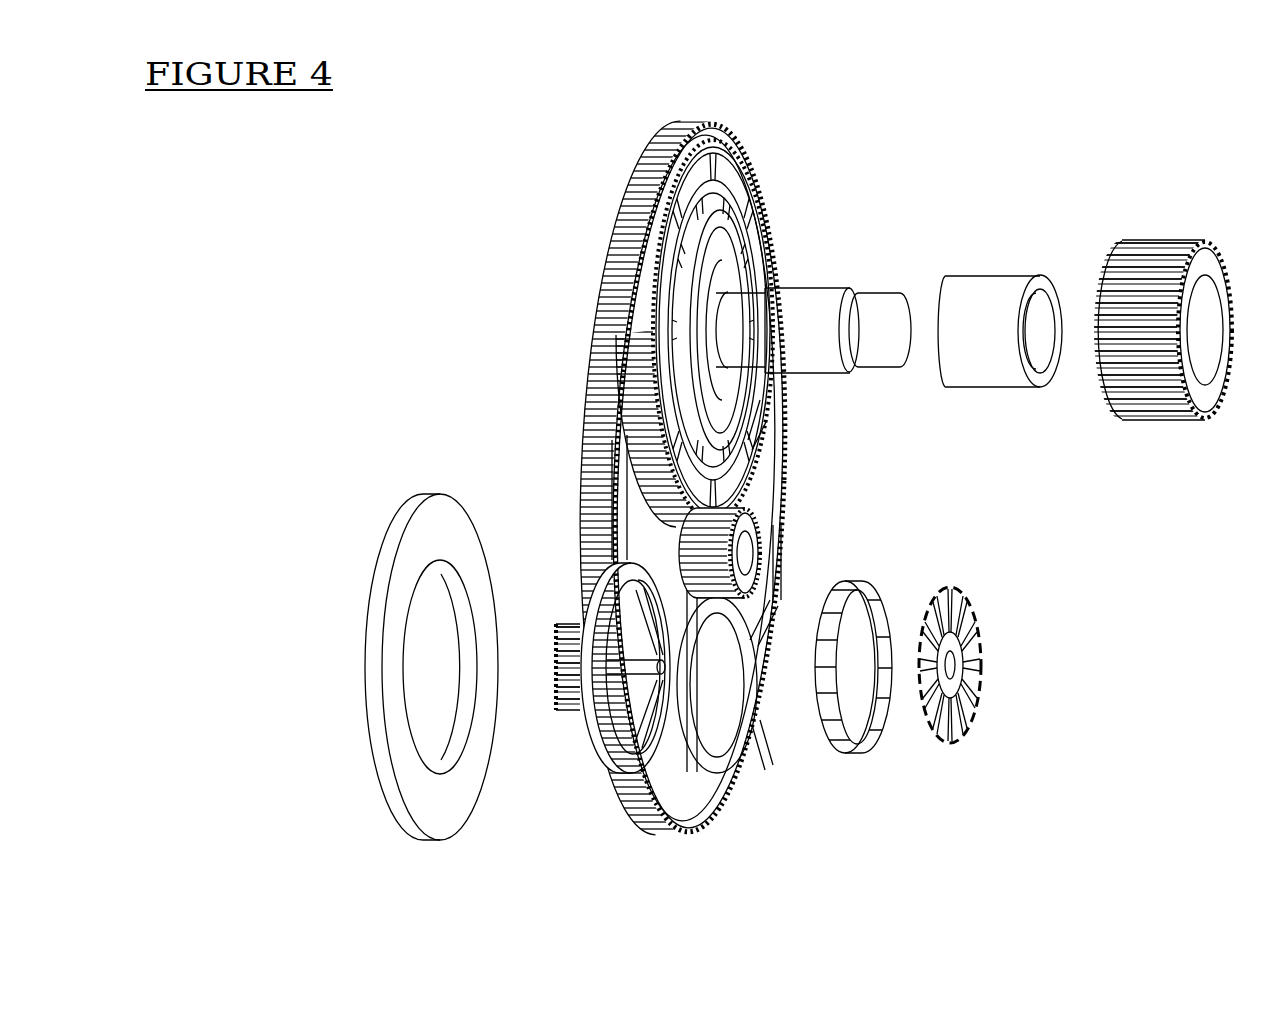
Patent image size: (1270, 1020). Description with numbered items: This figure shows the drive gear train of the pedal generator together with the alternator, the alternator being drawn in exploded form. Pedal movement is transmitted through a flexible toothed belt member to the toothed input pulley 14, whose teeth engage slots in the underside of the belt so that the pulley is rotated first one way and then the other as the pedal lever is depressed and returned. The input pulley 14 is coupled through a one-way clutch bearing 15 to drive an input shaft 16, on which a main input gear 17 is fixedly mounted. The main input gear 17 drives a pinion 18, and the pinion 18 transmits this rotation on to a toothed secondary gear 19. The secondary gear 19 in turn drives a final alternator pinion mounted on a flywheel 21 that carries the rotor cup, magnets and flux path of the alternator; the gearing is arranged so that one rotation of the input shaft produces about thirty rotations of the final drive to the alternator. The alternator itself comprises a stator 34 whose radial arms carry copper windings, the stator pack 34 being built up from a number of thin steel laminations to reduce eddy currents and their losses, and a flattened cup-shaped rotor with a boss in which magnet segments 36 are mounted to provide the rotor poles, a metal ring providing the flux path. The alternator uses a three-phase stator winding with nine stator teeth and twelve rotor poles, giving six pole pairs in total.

The toothed input pulley 14 is at (1165, 240).
The one-way clutch bearing 15 is at (997, 276).
The input shaft 16 is at (873, 295).
The main input gear 17 is at (766, 190).
The pinion 18 is at (752, 543).
The toothed secondary gear 19 is at (578, 456).
The flywheel 21 is at (455, 822).
The alternator stator 34 is at (981, 645).
The magnet segments 36 is at (843, 752).